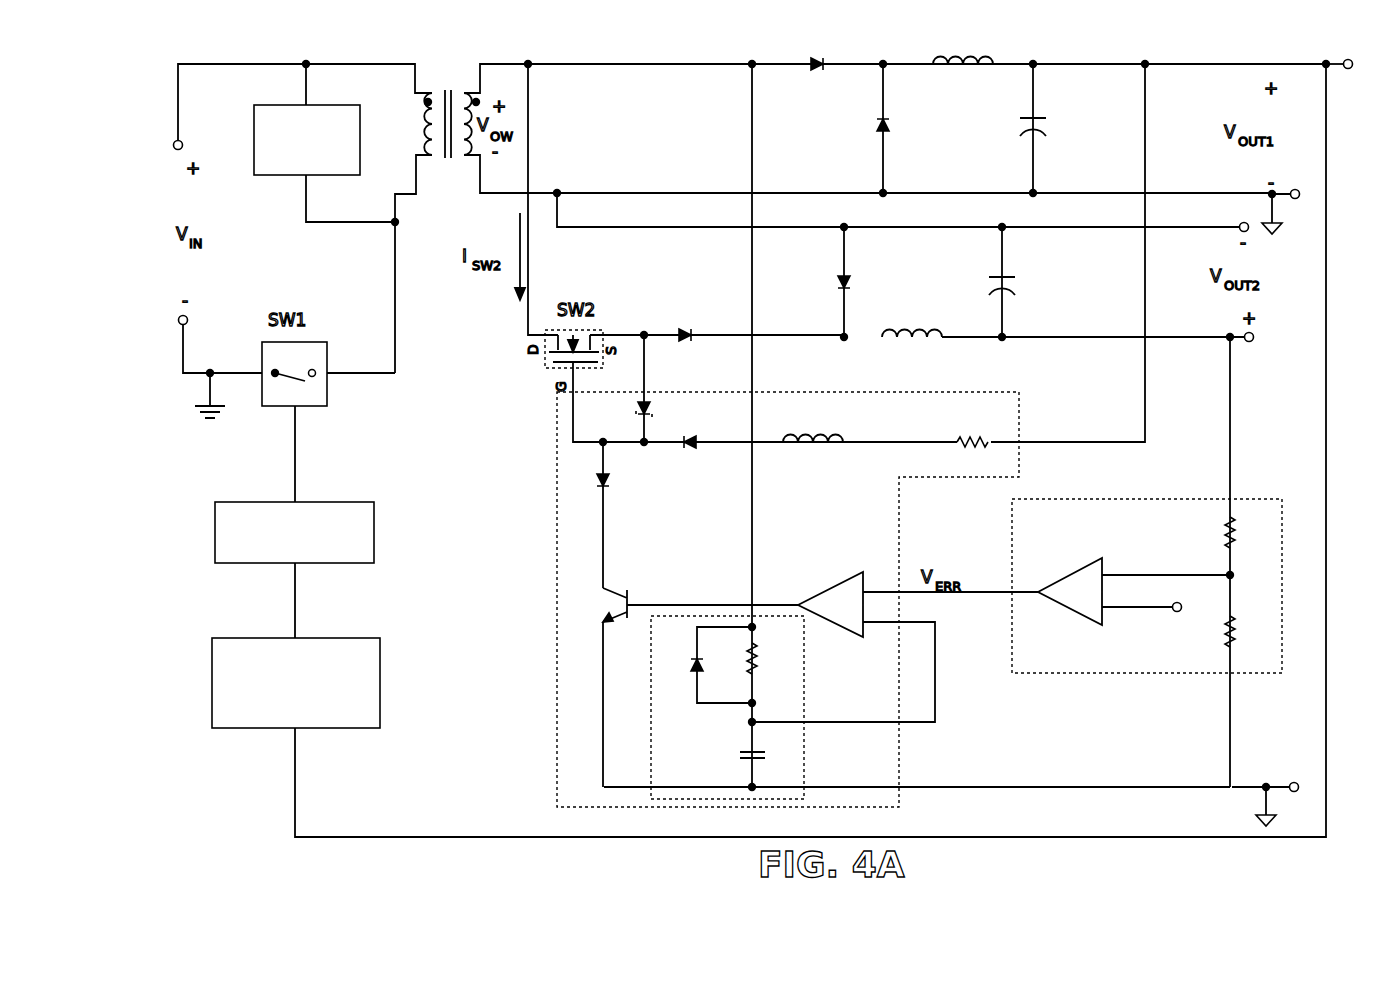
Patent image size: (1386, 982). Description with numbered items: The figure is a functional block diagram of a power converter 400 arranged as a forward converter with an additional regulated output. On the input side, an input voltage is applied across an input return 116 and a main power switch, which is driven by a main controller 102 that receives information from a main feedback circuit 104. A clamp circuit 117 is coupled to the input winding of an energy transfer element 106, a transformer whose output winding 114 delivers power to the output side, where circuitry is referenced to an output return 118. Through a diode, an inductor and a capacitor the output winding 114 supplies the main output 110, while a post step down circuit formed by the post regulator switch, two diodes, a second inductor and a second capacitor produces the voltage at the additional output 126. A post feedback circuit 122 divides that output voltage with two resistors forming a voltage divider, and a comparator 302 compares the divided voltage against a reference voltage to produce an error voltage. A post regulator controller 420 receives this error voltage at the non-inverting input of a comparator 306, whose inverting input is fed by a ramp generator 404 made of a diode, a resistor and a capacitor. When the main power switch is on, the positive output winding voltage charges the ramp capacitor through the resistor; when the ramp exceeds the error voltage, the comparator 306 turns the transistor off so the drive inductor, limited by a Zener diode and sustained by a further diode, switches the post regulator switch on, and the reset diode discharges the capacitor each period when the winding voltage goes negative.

The power converter 400 is at (804, 48).
The output winding 114 is at (468, 91).
The energy transfer element 106 is at (450, 160).
The clamp circuit 117 is at (281, 178).
The input return 116 is at (220, 426).
The main controller 102 is at (381, 535).
The main feedback circuit 104 is at (390, 688).
The main output 110 is at (1350, 70).
The output return 118 is at (1268, 206).
The additional output 126 is at (1252, 344).
The post regulator controller 420 is at (548, 442).
The ramp generator 404 is at (818, 760).
The post feedback circuit 122 is at (1147, 557).
The comparator 302 is at (1092, 600).
The comparator 306 is at (853, 612).